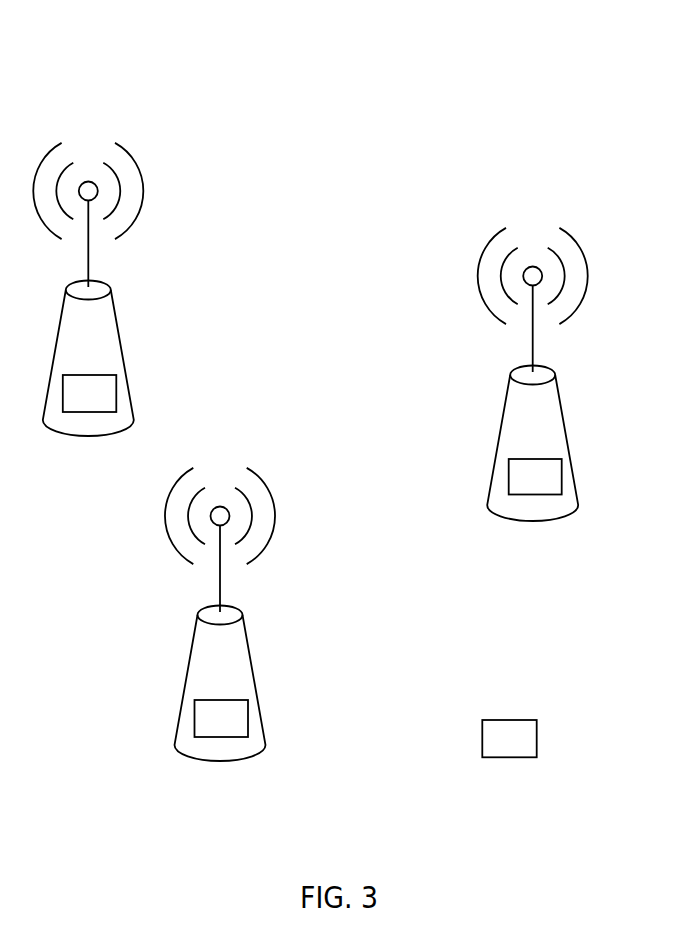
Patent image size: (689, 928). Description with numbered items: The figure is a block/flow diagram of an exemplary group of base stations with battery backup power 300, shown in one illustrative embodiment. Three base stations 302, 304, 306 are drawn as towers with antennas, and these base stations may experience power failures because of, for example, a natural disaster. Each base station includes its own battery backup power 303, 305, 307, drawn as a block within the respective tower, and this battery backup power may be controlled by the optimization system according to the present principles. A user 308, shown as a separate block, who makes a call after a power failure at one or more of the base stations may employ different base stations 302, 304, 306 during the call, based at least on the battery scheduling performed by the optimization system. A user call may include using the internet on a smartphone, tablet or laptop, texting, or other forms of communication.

The group of base stations with battery backup power 300 is at (340, 36).
The base station 302 is at (88, 289).
The battery backup power 303 is at (90, 393).
The base station 304 is at (533, 374).
The battery backup power 305 is at (535, 477).
The base station 306 is at (220, 614).
The battery backup power 307 is at (222, 718).
The user 308 is at (492, 750).